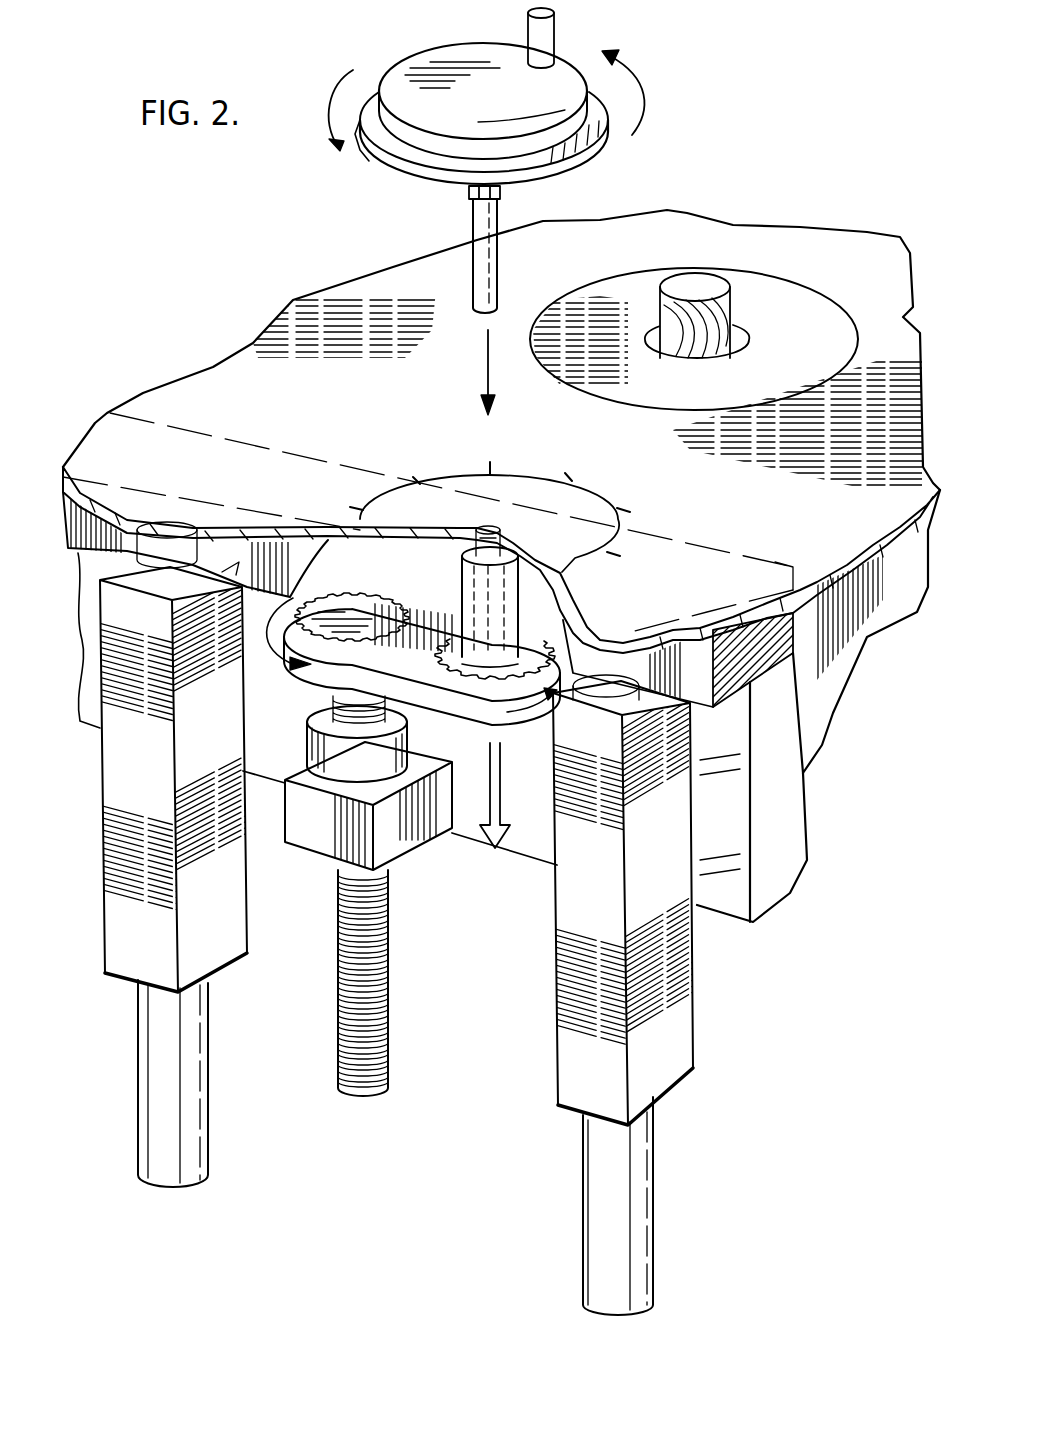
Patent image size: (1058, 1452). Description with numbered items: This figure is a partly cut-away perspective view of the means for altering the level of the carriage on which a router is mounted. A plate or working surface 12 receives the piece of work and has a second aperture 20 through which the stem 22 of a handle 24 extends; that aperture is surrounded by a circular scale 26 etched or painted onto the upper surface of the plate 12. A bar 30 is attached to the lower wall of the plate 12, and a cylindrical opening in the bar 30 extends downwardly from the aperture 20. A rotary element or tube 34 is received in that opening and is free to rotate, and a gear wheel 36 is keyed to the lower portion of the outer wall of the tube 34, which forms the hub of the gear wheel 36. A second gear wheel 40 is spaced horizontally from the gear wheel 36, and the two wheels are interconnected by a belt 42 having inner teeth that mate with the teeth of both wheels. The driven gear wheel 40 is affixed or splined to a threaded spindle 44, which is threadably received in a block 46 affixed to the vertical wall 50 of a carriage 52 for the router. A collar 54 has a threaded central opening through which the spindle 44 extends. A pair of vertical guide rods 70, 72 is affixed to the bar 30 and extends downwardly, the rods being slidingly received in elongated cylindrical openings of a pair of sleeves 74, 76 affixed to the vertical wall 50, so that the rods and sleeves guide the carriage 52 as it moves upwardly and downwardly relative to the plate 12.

The plate 12 is at (215, 373).
The second aperture 20 is at (494, 535).
The stem 22 is at (498, 274).
The handle 24 is at (432, 62).
The circular scale 26 is at (447, 480).
The bar 30 is at (760, 656).
The rotary element or tube 34 is at (466, 592).
The gear wheel 36 is at (483, 537).
The second gear wheel 40 is at (345, 612).
The belt 42 is at (318, 683).
The threaded spindle 44 is at (337, 985).
The block 46 is at (418, 845).
The vertical wall 50 is at (722, 902).
The carriage 52 is at (808, 722).
The collar 54 is at (318, 737).
The vertical guide rod 70 is at (138, 1098).
The vertical guide rod 72 is at (580, 1125).
The sleeve 74 is at (104, 812).
The sleeve 76 is at (553, 958).